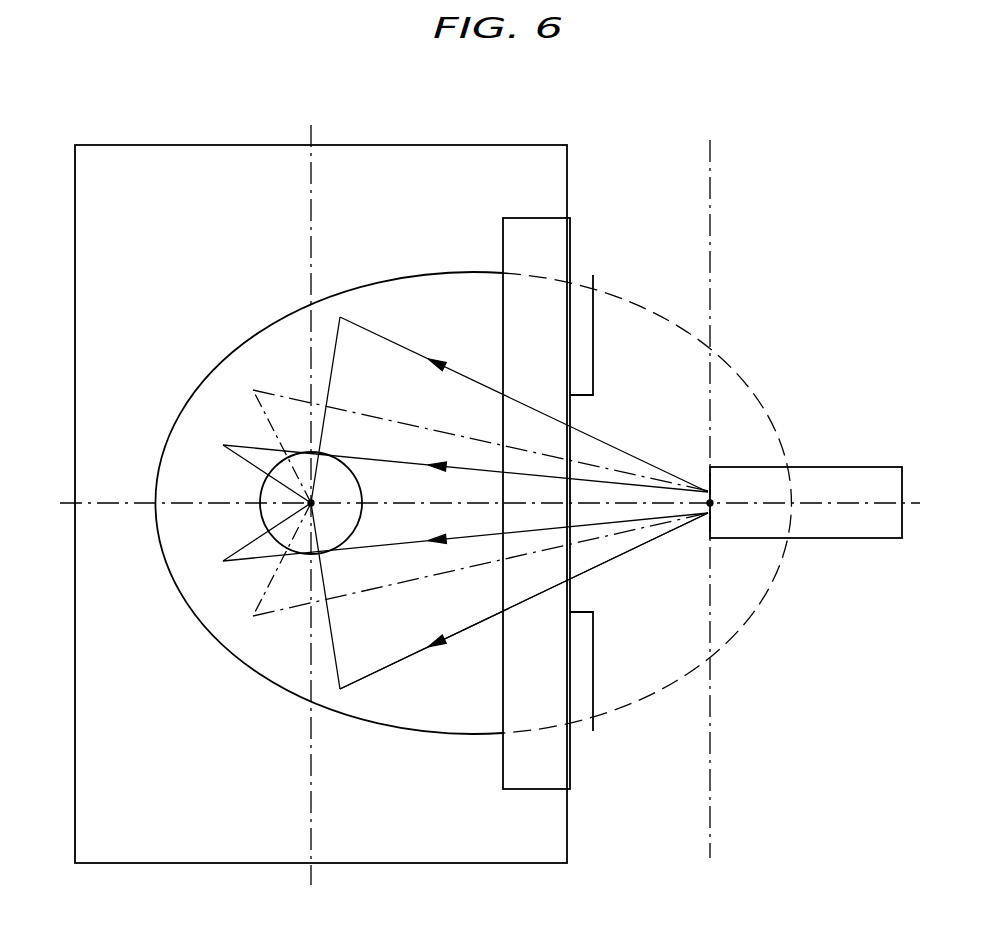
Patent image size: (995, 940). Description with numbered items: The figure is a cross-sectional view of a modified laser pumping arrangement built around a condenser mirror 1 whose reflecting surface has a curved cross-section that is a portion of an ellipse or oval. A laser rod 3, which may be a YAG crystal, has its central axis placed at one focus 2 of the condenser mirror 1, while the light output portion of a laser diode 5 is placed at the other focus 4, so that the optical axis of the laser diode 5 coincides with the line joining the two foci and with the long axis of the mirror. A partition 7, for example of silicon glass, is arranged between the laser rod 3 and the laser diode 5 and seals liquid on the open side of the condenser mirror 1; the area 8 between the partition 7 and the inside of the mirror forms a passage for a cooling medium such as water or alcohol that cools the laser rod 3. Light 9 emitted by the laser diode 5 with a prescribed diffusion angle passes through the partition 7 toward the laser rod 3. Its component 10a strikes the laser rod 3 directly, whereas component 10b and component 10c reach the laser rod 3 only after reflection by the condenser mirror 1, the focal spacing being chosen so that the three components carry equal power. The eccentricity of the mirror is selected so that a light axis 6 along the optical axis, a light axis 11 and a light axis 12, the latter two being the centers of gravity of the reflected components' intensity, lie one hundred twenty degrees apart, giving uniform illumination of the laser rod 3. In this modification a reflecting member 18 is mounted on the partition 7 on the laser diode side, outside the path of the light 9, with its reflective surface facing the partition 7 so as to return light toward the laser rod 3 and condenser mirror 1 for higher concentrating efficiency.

The condenser mirror 1 is at (201, 153).
The focus 2 is at (268, 483).
The laser rod 3 is at (263, 522).
The focus 4 is at (712, 500).
The laser diode 5 is at (870, 528).
The light axis 6 is at (63, 503).
The partition 7 is at (550, 252).
The area 8 is at (460, 718).
The light 9 is at (630, 550).
The component 10a is at (406, 536).
The component 10b is at (397, 392).
The component 10c is at (391, 643).
The light axis 11 is at (595, 467).
The light axis 12 is at (433, 578).
The reflecting member 18 is at (580, 308).